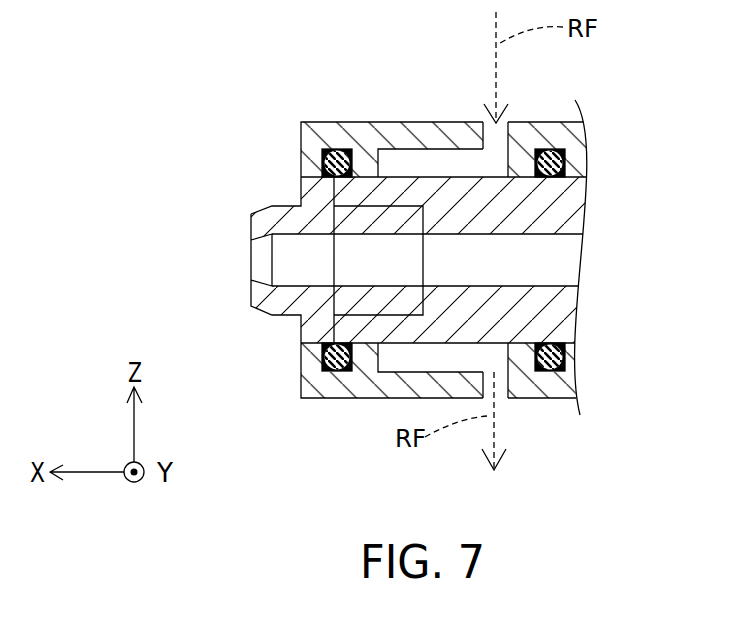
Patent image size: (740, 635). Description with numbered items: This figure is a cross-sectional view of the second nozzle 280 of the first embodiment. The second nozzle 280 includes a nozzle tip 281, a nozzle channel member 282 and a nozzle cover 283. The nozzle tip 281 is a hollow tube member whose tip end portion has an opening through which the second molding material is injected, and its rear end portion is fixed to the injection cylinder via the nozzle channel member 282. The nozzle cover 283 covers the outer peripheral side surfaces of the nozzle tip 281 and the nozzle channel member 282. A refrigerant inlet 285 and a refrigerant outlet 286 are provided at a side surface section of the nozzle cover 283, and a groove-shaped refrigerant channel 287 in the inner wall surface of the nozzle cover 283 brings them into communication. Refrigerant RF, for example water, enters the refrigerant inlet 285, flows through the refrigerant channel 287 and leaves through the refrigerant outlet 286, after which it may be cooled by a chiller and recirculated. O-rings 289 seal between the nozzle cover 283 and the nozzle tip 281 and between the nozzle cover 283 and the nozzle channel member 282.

The second nozzle 280 is at (262, 117).
The nozzle tip 281 is at (262, 208).
The nozzle channel member 282 is at (548, 210).
The nozzle cover 283 is at (423, 124).
The refrigerant inlet 285 is at (510, 122).
The refrigerant outlet 286 is at (510, 400).
The refrigerant channel 287 is at (480, 170).
The O-rings 289 is at (558, 164).